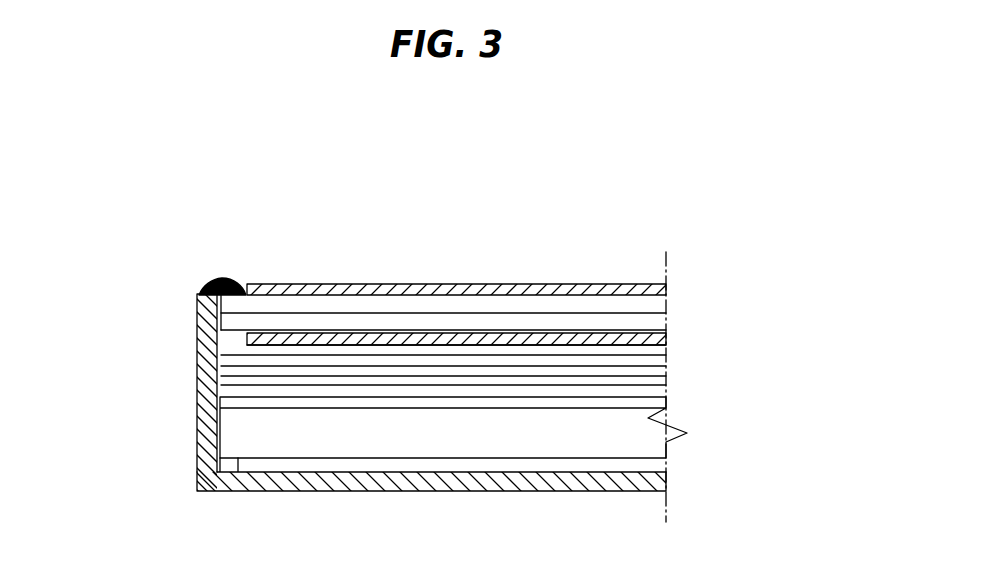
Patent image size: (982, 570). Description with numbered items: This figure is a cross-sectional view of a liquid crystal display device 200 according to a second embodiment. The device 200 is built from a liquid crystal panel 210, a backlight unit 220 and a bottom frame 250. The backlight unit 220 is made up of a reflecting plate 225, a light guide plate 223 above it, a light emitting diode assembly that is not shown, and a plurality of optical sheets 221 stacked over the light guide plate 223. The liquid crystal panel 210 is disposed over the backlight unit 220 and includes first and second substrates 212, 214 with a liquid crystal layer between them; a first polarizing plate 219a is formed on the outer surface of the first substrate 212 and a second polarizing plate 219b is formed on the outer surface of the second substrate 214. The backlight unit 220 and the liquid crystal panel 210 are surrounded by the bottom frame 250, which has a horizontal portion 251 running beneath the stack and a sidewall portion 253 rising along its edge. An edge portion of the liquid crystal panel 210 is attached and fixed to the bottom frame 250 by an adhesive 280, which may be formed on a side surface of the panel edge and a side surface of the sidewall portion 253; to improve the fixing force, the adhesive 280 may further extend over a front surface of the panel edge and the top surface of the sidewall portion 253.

The liquid crystal display device 200 is at (428, 146).
The liquid crystal panel 210 is at (533, 221).
The first substrate 212 is at (500, 330).
The second substrate 214 is at (453, 318).
The first polarizing plate 219a is at (613, 342).
The second polarizing plate 219b is at (563, 297).
The backlight unit 220 is at (763, 383).
The optical sheets 221 is at (661, 373).
The light guide plate 223 is at (660, 449).
The reflecting plate 225 is at (663, 470).
The bottom frame 250 is at (128, 518).
The horizontal portion 251 is at (270, 486).
The sidewall portion 253 is at (197, 427).
The adhesive 280 is at (203, 287).